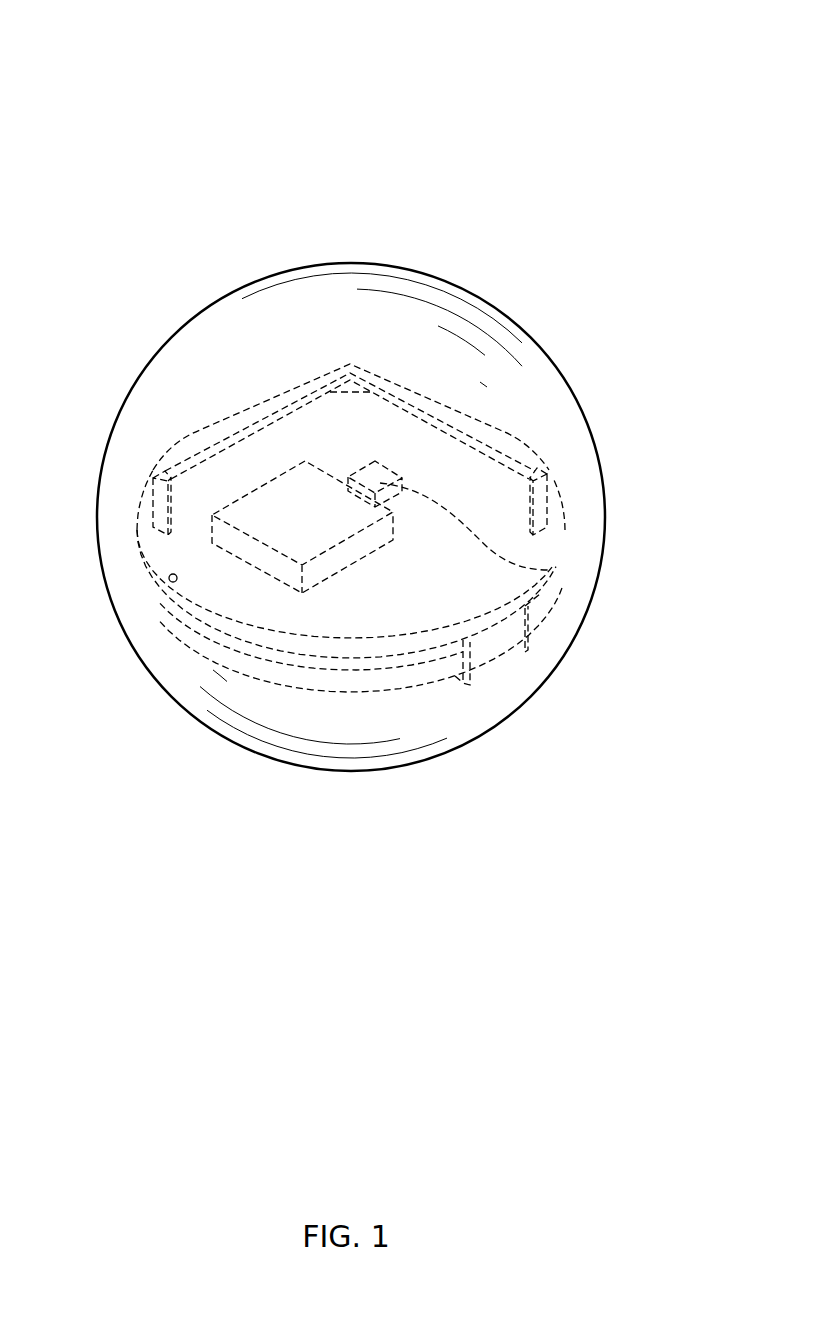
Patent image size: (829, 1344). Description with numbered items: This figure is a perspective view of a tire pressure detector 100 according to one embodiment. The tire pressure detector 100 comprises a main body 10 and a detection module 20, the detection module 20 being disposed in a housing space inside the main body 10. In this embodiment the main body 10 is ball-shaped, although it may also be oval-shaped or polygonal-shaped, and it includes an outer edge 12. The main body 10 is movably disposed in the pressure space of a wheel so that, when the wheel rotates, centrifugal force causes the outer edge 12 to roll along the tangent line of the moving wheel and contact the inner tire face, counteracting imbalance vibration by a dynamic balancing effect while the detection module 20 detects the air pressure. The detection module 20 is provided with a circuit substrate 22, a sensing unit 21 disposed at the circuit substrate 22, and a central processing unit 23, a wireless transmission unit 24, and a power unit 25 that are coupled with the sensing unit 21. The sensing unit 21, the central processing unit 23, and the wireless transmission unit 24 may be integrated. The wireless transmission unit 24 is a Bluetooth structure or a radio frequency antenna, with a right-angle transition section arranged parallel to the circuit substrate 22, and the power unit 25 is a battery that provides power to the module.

The tire pressure detector 100 is at (80, 53).
The main body 10 is at (492, 285).
The outer edge 12 is at (515, 707).
The detection module 20 is at (530, 432).
The sensing unit 21 is at (538, 569).
The circuit substrate 22 is at (263, 606).
The central processing unit 23 is at (258, 530).
The wireless transmission unit 24 is at (370, 360).
The power unit 25 is at (393, 676).